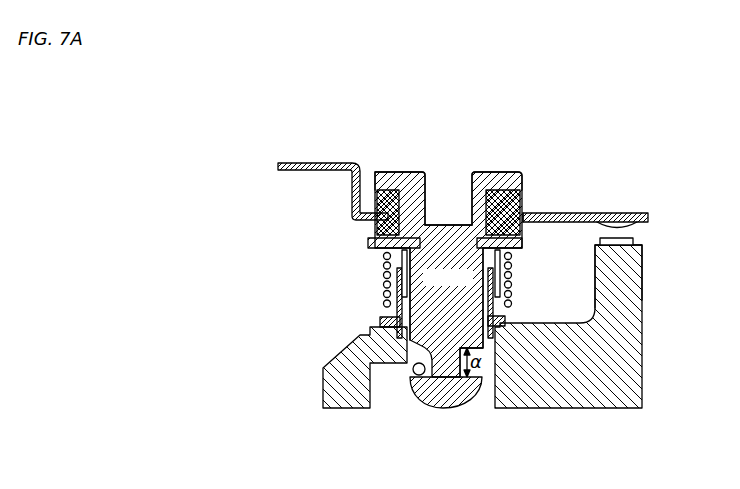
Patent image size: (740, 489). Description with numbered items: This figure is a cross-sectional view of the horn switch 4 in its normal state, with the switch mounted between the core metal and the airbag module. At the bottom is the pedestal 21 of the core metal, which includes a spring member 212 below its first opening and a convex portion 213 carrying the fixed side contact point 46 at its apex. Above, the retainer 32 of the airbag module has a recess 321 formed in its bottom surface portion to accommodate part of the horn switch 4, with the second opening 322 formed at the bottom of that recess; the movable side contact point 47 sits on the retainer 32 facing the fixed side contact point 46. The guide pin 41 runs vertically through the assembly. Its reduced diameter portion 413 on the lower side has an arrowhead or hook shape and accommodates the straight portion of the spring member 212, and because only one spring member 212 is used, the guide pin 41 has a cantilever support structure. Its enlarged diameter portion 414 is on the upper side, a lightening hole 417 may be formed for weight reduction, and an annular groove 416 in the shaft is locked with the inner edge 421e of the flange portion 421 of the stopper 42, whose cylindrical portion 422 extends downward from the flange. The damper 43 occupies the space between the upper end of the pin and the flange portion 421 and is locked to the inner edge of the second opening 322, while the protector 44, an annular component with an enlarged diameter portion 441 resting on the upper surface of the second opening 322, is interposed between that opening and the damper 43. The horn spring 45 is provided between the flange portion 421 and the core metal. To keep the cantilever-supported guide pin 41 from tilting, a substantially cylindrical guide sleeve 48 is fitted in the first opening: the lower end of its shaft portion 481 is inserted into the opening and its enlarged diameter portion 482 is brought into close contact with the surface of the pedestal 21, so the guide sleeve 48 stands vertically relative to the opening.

The horn switch 4 is at (378, 139).
The retainer 32 is at (300, 163).
The recess 321 is at (612, 213).
The second opening 322 is at (508, 220).
The guide pin 41 is at (442, 293).
The reduced diameter portion 413 is at (450, 382).
The enlarged diameter portion 414 is at (490, 172).
The annular groove 416 is at (452, 228).
The lightening hole 417 is at (438, 172).
The stopper 42 is at (512, 257).
The flange portion 421 is at (370, 243).
The inner edge 421e is at (446, 312).
The cylindrical portion 422 is at (383, 268).
The damper 43 is at (519, 191).
The protector 44 is at (375, 214).
The enlarged diameter portion 441 is at (523, 203).
The horn spring 45 is at (510, 285).
The fixed side contact point 46 is at (635, 242).
The movable side contact point 47 is at (637, 225).
The guide sleeve 48 is at (500, 302).
The shaft portion 481 is at (392, 303).
The enlarged diameter portion 482 is at (380, 323).
The pedestal 21 is at (583, 410).
The spring member 212 is at (402, 390).
The convex portion 213 is at (644, 292).